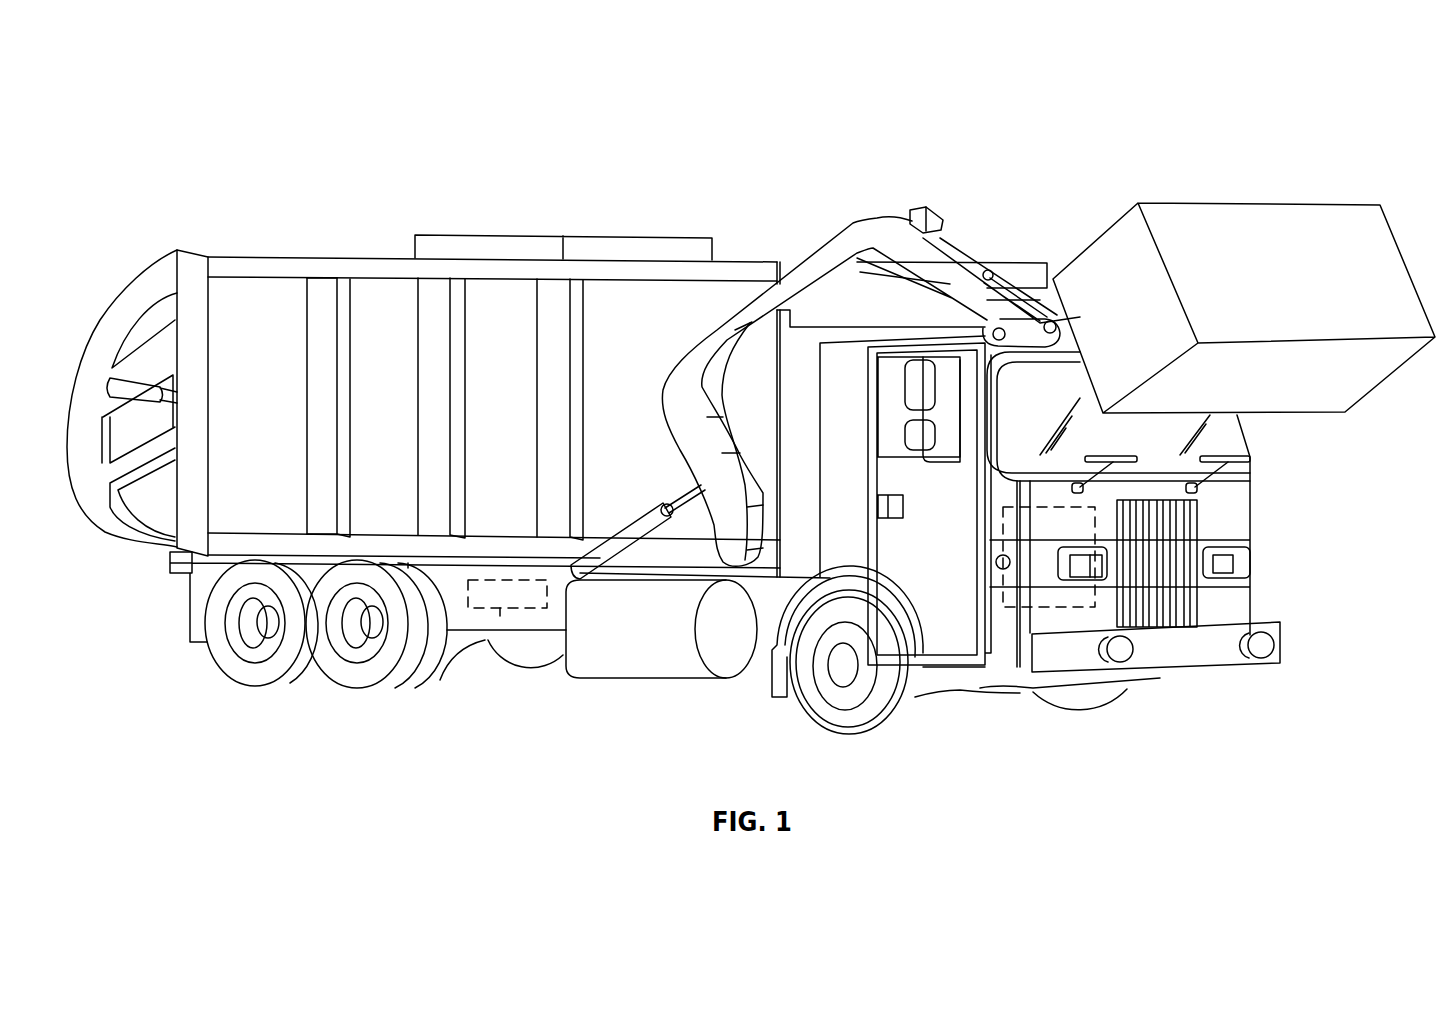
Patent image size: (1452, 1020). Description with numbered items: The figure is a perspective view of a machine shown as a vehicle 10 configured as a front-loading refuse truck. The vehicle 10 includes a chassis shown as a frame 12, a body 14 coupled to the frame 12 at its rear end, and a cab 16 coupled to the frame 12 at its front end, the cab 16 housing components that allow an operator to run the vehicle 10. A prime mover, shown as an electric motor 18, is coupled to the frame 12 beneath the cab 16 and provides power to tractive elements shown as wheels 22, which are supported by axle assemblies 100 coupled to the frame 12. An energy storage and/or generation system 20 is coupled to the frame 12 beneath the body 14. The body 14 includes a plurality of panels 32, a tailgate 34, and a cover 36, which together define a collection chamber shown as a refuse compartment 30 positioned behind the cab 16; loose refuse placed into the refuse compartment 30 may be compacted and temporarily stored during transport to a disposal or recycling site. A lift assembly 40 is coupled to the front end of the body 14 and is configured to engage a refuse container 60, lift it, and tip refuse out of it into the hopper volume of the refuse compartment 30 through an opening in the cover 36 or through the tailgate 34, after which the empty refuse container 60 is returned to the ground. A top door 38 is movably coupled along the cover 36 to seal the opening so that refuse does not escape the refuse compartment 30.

The vehicle 10 is at (146, 126).
The frame 12 is at (537, 617).
The body 14 is at (372, 268).
The cab 16 is at (1004, 653).
The electric motor 18 is at (1040, 607).
The energy storage and/or generation system 20 is at (487, 642).
The wheels 22 is at (885, 722).
The refuse compartment 30 is at (719, 204).
The panels 32 is at (258, 290).
The tailgate 34 is at (130, 303).
The cover 36 is at (318, 256).
The top door 38 is at (485, 234).
The lift assembly 40 is at (970, 191).
The refuse container 60 is at (1370, 226).
The axle assemblies 100 is at (824, 755).